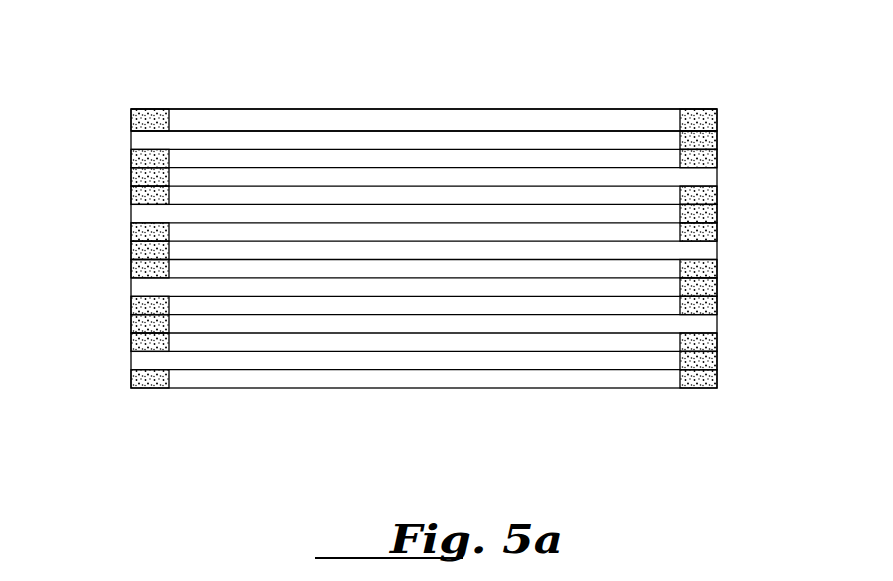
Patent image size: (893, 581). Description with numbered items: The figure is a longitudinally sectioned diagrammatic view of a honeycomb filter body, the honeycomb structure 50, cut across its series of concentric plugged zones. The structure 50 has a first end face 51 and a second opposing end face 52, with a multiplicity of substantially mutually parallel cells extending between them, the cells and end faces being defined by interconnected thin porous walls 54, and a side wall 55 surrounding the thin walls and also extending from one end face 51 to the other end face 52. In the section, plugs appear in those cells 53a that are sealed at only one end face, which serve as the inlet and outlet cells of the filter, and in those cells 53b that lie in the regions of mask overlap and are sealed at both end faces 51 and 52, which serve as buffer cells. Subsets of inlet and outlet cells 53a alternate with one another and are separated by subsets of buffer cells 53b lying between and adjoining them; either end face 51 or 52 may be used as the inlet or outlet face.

The honeycomb structure 50 is at (463, 90).
The first end face 51 is at (118, 381).
The second opposing end face 52 is at (728, 130).
The cells sealed at only one end face 53a is at (282, 325).
The buffer cells 53b is at (617, 118).
The thin porous walls 54 is at (410, 315).
The side wall 55 is at (525, 108).